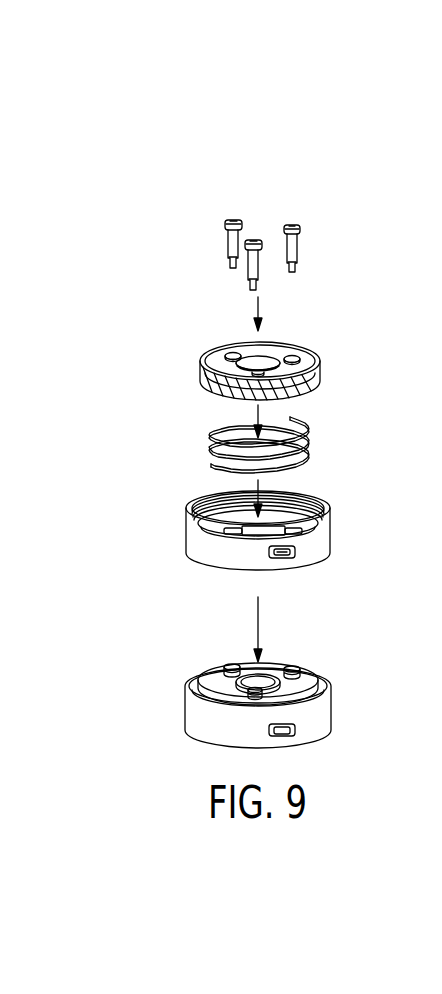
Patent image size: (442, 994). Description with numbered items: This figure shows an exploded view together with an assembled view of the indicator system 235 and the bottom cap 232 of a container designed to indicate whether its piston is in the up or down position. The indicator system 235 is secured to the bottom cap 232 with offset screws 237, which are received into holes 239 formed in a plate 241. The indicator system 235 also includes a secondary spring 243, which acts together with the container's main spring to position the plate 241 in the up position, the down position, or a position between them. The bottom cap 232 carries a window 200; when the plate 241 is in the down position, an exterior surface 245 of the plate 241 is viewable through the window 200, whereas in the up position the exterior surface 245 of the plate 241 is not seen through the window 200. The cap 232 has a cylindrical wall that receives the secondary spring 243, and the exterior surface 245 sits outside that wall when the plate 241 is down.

The window 200 is at (292, 557).
The bottom cap 232 is at (360, 490).
The indicator system 235 is at (360, 223).
The offset screws 237 is at (233, 218).
The holes 239 is at (294, 353).
The plate 241 is at (186, 342).
The secondary spring 243 is at (186, 417).
The exterior surface 245 is at (297, 387).